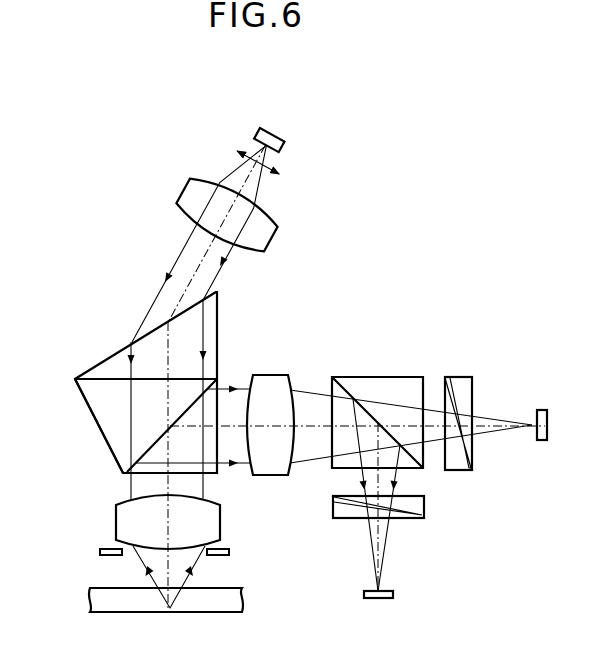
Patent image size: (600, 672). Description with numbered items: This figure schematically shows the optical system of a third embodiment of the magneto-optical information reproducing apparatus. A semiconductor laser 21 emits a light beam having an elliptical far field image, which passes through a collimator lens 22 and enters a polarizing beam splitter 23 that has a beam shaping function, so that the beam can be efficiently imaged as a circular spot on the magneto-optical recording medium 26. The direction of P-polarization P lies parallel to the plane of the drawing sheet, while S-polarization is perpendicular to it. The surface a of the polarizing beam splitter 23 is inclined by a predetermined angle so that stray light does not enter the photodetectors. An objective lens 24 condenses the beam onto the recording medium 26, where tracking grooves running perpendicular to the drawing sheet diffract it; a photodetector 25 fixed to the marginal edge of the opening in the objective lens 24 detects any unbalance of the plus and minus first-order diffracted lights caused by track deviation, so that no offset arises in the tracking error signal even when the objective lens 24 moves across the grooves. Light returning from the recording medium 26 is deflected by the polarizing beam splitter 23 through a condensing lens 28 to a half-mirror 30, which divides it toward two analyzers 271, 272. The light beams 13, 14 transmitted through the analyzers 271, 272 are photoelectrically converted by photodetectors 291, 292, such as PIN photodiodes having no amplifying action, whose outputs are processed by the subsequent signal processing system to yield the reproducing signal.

The semiconductor laser 21 is at (262, 128).
The collimator lens 22 is at (188, 188).
The polarizing beam splitter 23 is at (100, 362).
The surface of the polarizing beam splitter a is at (106, 443).
The direction of P-polarization P is at (269, 171).
The objective lens 24 is at (123, 522).
The photodetector 25 is at (99, 556).
The magneto-optical recording medium 26 is at (230, 596).
The condensing lens 28 is at (277, 382).
The half-mirror 30 is at (405, 376).
The light beam 13 is at (492, 433).
The light beam 14 is at (388, 538).
The analyzer 271 is at (475, 376).
The analyzer 272 is at (425, 503).
The photodetector 291 is at (548, 414).
The photodetector 292 is at (395, 592).